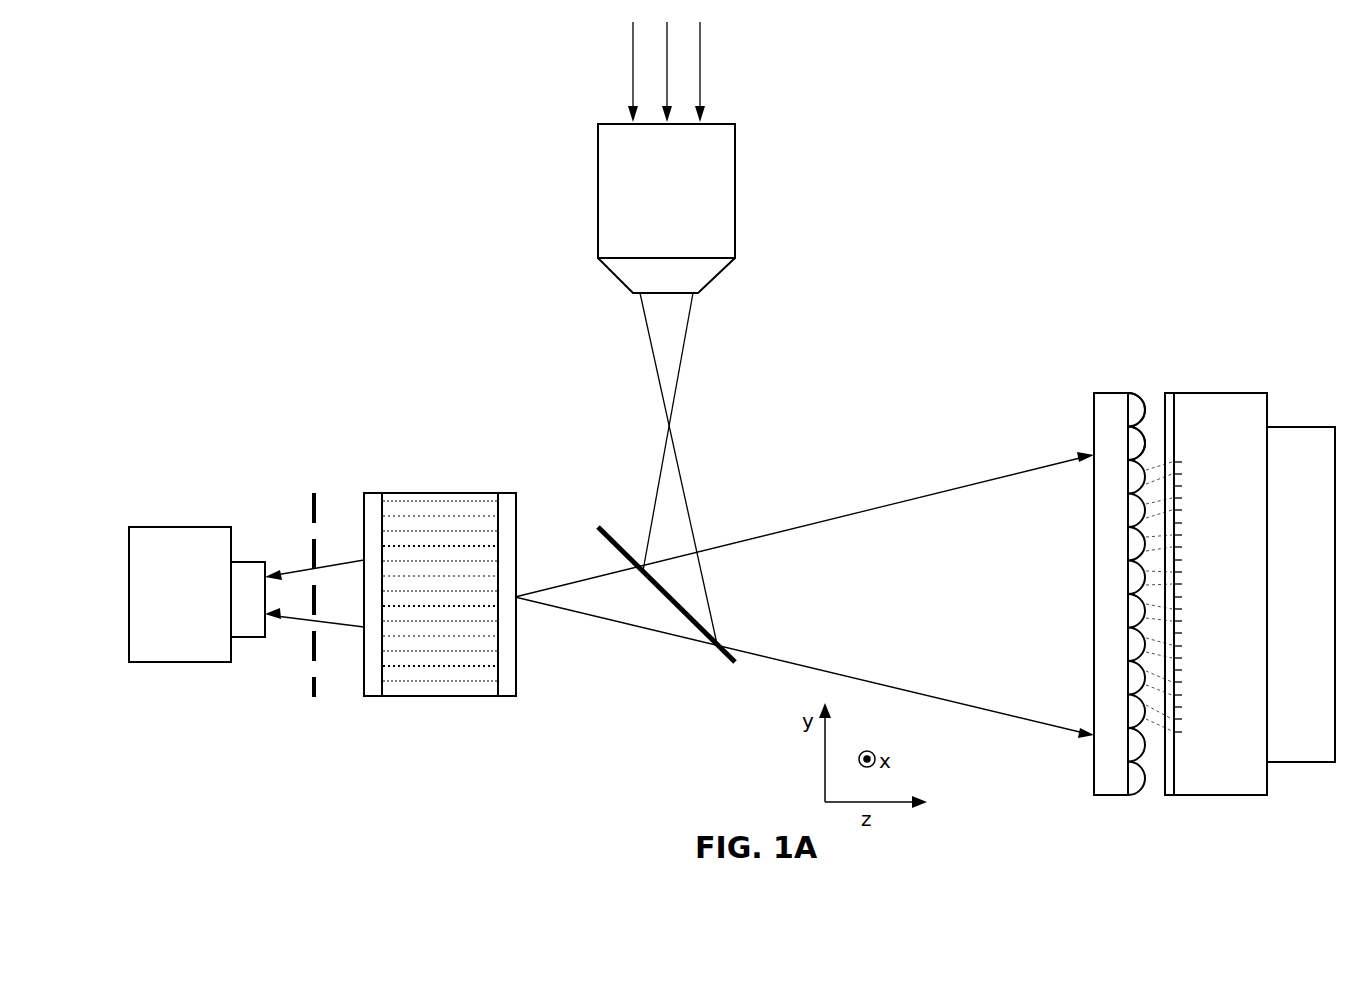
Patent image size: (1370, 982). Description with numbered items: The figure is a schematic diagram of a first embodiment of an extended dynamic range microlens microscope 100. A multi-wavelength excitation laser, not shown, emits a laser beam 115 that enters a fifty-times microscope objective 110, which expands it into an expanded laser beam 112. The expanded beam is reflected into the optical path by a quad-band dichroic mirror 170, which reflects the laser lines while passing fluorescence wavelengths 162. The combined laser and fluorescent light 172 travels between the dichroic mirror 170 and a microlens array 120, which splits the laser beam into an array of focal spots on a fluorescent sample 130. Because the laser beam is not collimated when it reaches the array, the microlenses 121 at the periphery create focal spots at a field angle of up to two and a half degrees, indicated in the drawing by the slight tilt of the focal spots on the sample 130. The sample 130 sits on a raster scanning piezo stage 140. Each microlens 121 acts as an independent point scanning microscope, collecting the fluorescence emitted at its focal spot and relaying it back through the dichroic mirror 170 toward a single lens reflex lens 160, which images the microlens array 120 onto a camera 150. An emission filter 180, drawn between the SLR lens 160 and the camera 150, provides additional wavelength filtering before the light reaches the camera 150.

The extended dynamic range microlens microscope 100 is at (304, 174).
The microscope objective 110 is at (666, 208).
The expanded laser beam 112 is at (652, 332).
The laser beam 115 is at (634, 55).
The microlens array 120 is at (1109, 797).
The microlenses 121 is at (1138, 443).
The fluorescent sample 130 is at (1216, 594).
The raster scanning piezo stage 140 is at (1301, 594).
The camera 150 is at (246, 594).
The single lens reflex lens 160 is at (444, 692).
The fluorescence wavelengths 162 is at (584, 616).
The quad-band dichroic mirror 170 is at (718, 652).
The combined laser and fluorescent light 172 is at (776, 538).
The emission filter 180 is at (313, 696).